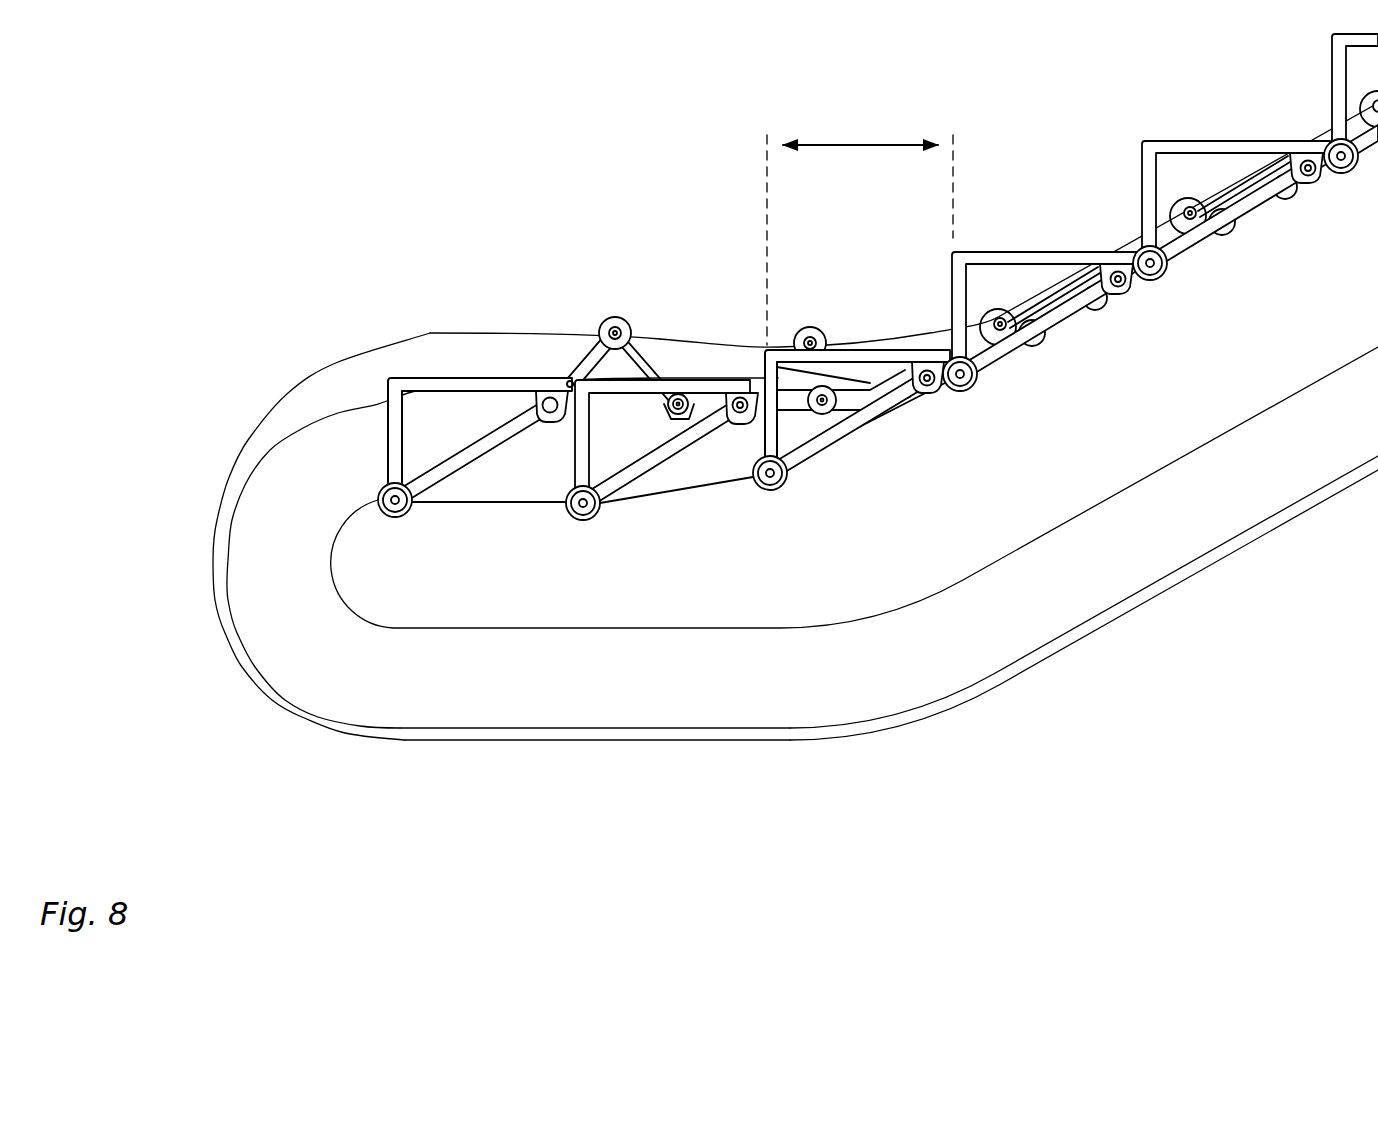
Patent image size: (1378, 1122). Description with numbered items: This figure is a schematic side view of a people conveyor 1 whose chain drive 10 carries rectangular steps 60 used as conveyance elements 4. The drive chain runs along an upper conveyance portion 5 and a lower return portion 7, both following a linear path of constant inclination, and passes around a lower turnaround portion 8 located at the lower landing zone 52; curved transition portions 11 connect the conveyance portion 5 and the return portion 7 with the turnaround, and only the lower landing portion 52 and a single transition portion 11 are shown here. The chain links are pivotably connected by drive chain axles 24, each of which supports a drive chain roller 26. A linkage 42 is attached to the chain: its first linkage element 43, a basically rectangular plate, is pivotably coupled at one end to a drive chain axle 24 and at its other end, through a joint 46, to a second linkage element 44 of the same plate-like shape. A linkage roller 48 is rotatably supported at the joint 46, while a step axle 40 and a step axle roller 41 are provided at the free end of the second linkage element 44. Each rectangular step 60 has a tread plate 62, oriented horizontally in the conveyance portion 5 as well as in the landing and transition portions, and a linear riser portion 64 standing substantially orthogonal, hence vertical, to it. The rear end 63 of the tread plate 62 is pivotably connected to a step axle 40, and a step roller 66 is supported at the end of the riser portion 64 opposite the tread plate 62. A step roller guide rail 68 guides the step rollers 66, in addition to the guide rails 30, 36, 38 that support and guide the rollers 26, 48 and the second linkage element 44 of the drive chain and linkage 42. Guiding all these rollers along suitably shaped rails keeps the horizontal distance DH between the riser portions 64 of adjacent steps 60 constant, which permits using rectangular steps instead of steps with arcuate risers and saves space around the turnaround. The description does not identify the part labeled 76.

The escalator 1 is at (482, 92).
The conveyance element 4 is at (602, 415).
The conveyance portion 5 is at (1108, 128).
The return portion 7 is at (1283, 572).
The lower turnaround portion 8 is at (240, 385).
The chain drive 10 is at (895, 312).
The transition portion 11 is at (962, 748).
The drive chain axle 24 is at (682, 396).
The drive chain roller 26 is at (658, 420).
The guide rail 30 is at (298, 440).
The guide rail 36 is at (462, 332).
The guide rail 38 is at (502, 553).
The step axle 40 is at (547, 384).
The step axle roller 41 is at (548, 427).
The linkage 42 is at (658, 295).
The first linkage element 43 is at (640, 360).
The second linkage element 44 is at (590, 357).
The joint 46 is at (612, 322).
The linkage roller 48 is at (640, 298).
The lower landing zone 52 is at (428, 222).
The rectangular step 60 is at (488, 478).
The tread plate 62 is at (437, 378).
The rear end 63 is at (545, 368).
The riser portion 64 is at (386, 402).
The step roller 66 is at (398, 520).
The step roller guide rail 68 is at (658, 505).
The riser support of adjacent step 76 is at (752, 432).